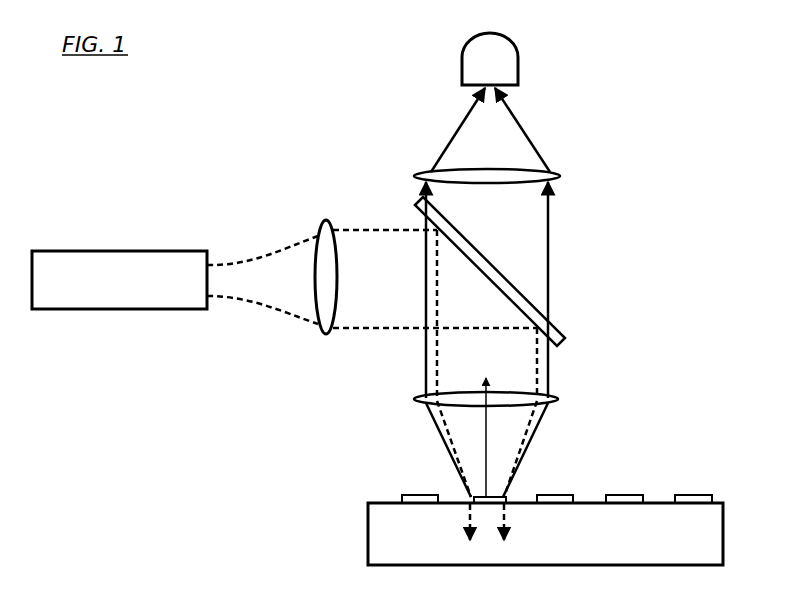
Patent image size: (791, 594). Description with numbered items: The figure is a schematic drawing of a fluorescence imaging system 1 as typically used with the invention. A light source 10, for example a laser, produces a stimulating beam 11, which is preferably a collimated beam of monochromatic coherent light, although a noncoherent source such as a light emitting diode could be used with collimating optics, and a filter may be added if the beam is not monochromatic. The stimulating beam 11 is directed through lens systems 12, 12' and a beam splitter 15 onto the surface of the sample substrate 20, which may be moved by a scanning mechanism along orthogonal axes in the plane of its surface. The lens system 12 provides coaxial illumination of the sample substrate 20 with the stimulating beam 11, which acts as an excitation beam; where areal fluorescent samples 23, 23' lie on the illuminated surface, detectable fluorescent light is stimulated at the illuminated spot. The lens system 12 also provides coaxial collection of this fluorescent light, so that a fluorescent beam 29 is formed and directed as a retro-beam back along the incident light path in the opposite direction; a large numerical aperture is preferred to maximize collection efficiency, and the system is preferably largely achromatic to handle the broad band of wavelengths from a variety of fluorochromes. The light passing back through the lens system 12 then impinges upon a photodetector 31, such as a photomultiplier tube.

The fluorescence imaging system 1 is at (703, 161).
The light source 10 is at (119, 280).
The stimulating beam 11 is at (386, 229).
The lens system 12 is at (446, 410).
The lens system 12' is at (304, 300).
The beam splitter 15 is at (563, 330).
The sample substrate 20 is at (545, 530).
The areal fluorescent sample 23 is at (546, 459).
The areal fluorescent sample 23' is at (404, 469).
The fluorescent beam 29 is at (549, 207).
The photodetector 31 is at (490, 59).